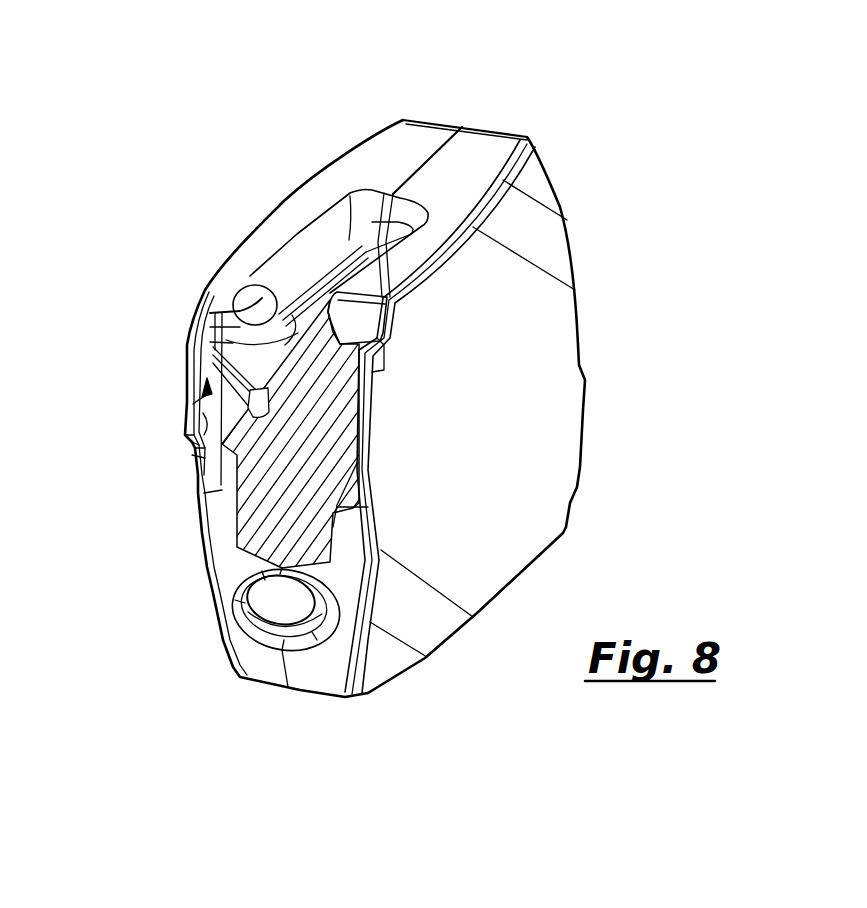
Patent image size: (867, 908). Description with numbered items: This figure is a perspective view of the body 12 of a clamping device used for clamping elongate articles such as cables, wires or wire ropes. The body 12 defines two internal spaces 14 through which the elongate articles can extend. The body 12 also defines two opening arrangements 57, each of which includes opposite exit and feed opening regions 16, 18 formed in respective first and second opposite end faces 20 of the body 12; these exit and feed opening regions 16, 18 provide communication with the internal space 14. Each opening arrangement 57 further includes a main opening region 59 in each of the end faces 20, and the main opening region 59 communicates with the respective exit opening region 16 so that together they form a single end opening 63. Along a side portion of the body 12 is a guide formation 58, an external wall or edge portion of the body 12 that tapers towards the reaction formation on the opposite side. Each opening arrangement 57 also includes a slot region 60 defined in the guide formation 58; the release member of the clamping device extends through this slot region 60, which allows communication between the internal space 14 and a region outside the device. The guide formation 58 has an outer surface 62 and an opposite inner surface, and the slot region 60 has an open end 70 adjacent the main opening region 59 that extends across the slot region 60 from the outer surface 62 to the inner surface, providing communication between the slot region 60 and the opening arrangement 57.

The body 12 is at (553, 330).
The internal space 14 is at (207, 330).
The exit opening region 16 is at (232, 523).
The feed opening region 18 is at (278, 620).
The end face 20 is at (213, 500).
The opening arrangement 57 is at (193, 404).
The guide formation 58 is at (387, 145).
The main opening region 59 is at (196, 445).
The slot region 60 is at (300, 253).
The outer surface 62 is at (485, 148).
The single end opening 63 is at (205, 368).
The open end 70 is at (262, 298).